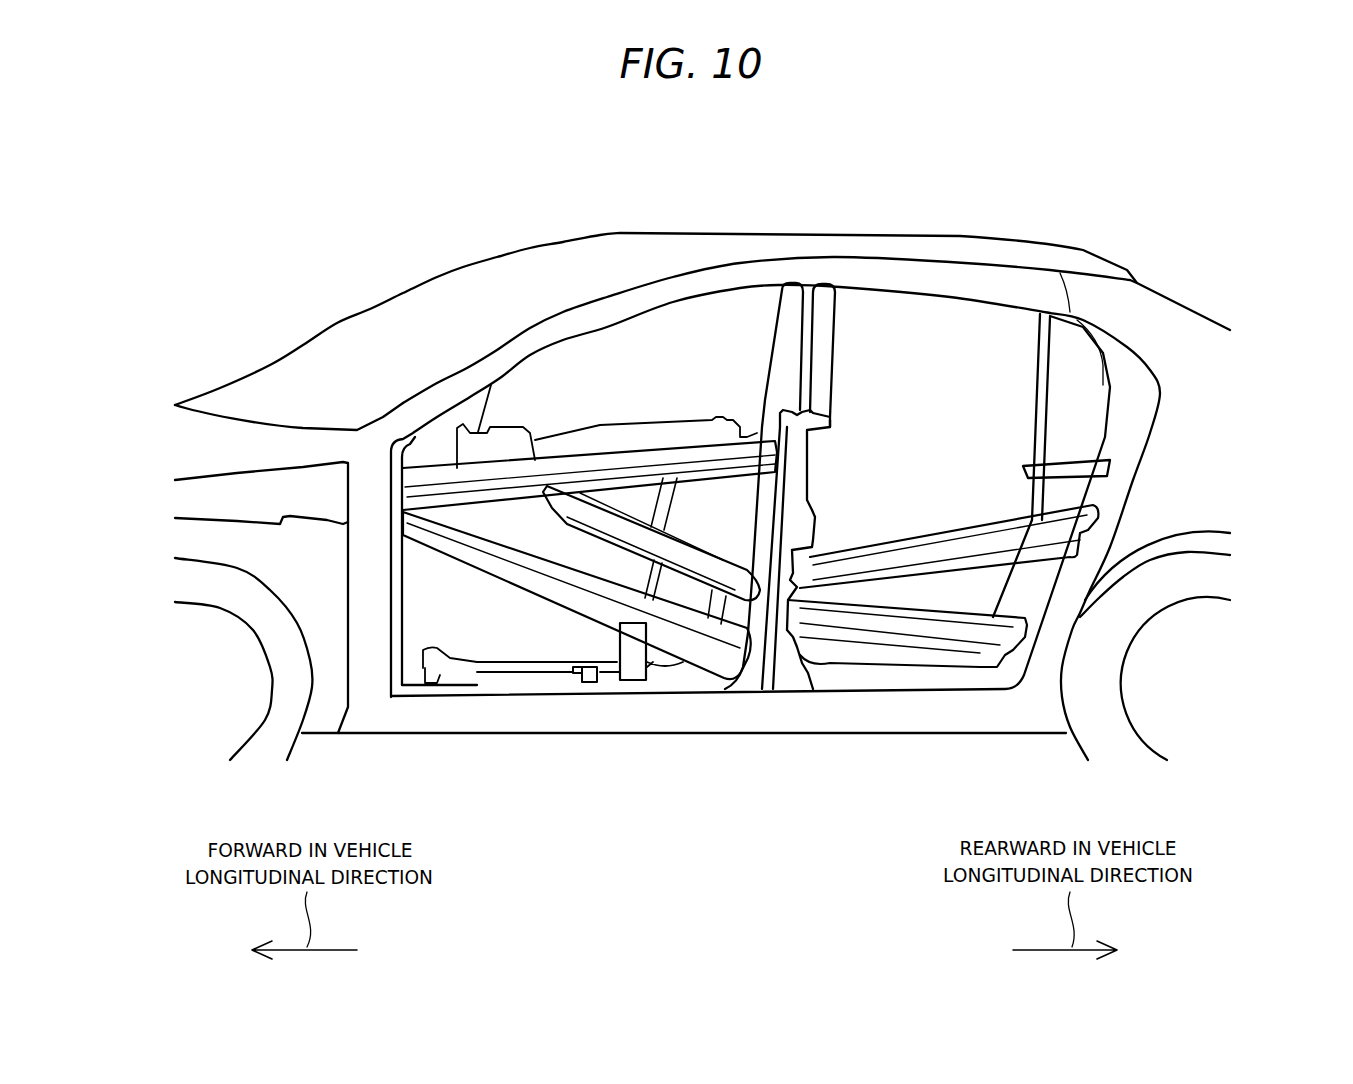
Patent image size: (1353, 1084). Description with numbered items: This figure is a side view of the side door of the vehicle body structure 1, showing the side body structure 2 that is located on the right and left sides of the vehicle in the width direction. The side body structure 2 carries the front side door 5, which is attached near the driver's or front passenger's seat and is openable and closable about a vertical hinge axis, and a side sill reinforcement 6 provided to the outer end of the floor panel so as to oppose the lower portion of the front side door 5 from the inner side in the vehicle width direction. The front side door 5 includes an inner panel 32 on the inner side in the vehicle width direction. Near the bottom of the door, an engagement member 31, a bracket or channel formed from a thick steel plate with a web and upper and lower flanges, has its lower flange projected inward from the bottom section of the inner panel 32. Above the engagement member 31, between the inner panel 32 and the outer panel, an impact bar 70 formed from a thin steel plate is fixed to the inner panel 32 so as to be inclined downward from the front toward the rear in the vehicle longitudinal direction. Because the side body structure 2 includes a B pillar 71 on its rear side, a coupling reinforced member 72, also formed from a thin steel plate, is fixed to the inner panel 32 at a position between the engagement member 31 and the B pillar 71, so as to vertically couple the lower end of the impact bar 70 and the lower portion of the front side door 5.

The body structure 1 is at (1158, 216).
The side body structure 2 is at (884, 898).
The front side door 5 is at (725, 690).
The side sill reinforcement 6 is at (905, 736).
The engagement member 31 is at (592, 683).
The inner panel 32 is at (603, 489).
The impact bar 70 is at (523, 593).
The B pillar 71 is at (826, 285).
The coupling reinforced member 72 is at (647, 685).